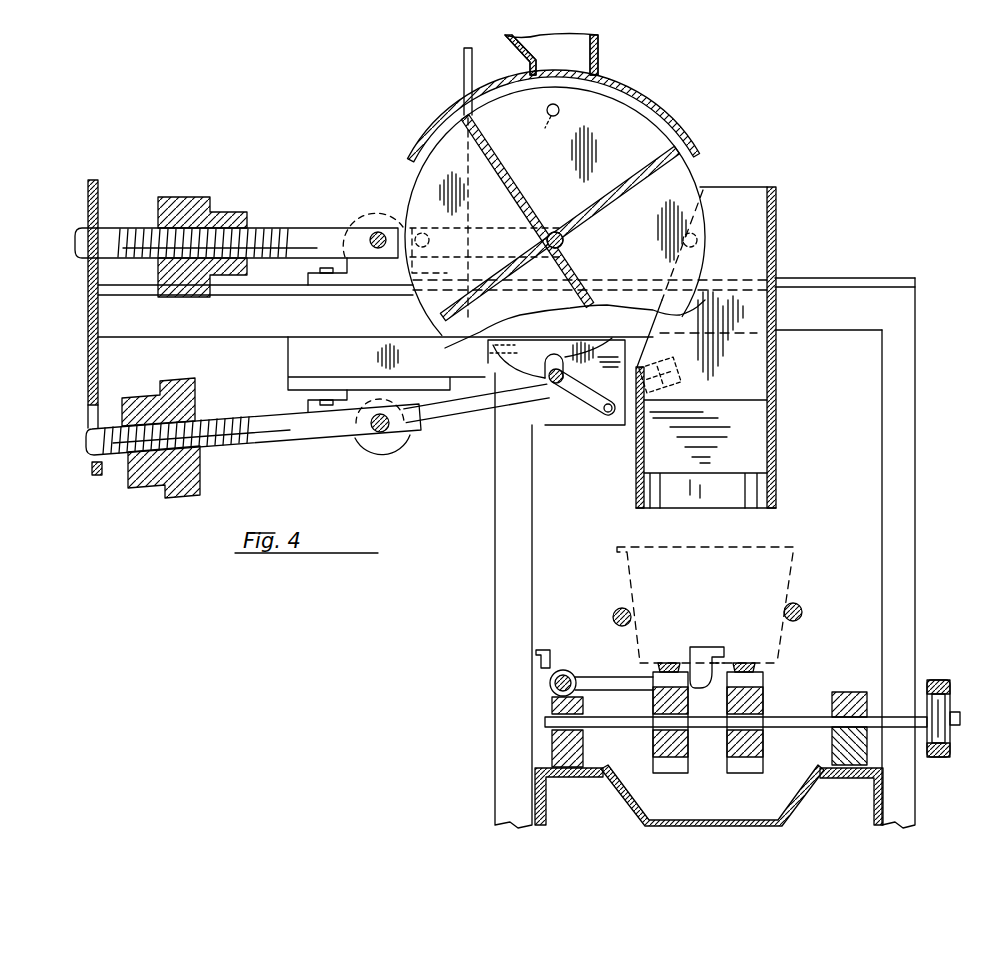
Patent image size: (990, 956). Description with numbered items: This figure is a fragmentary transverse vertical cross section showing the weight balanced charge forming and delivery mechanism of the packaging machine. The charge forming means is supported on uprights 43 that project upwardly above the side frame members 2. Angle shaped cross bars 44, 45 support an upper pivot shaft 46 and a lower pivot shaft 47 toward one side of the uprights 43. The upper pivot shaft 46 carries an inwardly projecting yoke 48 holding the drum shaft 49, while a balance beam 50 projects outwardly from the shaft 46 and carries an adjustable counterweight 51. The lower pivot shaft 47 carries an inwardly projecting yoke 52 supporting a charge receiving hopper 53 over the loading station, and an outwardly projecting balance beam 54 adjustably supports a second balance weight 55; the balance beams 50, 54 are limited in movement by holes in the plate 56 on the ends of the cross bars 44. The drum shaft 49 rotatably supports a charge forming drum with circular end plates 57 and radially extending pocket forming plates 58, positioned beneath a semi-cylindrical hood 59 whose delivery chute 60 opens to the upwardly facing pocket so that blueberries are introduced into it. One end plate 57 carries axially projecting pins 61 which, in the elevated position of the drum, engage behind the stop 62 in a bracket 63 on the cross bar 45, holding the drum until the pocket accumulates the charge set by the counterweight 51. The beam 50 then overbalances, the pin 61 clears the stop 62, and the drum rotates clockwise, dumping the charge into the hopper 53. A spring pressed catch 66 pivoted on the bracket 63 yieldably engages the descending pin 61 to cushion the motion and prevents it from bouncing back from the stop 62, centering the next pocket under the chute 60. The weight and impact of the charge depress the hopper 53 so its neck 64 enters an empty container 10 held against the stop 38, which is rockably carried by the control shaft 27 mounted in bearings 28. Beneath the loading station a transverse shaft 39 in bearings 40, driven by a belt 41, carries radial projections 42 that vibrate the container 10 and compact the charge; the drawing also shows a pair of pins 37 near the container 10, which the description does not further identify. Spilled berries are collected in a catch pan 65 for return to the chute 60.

The side frame members 2 is at (545, 783).
The container 10 is at (624, 587).
The control shaft 27 is at (565, 680).
The bearings 28 is at (580, 677).
The pins 37 is at (802, 612).
The stop 38 is at (706, 650).
The transverse shaft 39 is at (790, 715).
The bearings 40 is at (845, 692).
The belt 41 is at (937, 684).
The radial projections 42 is at (683, 775).
The uprights 43 is at (512, 590).
The cross bar 44 is at (254, 328).
The cross bar 45 is at (293, 368).
The upper pivot shaft 46 is at (375, 234).
The lower pivot shaft 47 is at (384, 433).
The yoke 48 is at (428, 216).
The drum shaft 49 is at (566, 236).
The balance beam 50 is at (298, 232).
The counterweight 51 is at (196, 198).
The yoke 52 is at (450, 415).
The charge receiving hopper 53 is at (776, 378).
The balance beam 54 is at (300, 441).
The balance weight 55 is at (184, 492).
The plate 56 is at (88, 378).
The end plates 57 is at (686, 173).
The pocket forming plates 58 is at (656, 170).
The hood 59 is at (688, 126).
The delivery chute 60 is at (598, 60).
The pins 61 is at (555, 436).
The stop 62 is at (548, 376).
The bracket 63 is at (488, 356).
The neck 64 is at (773, 498).
The catch pan 65 is at (800, 791).
The catch 66 is at (586, 392).